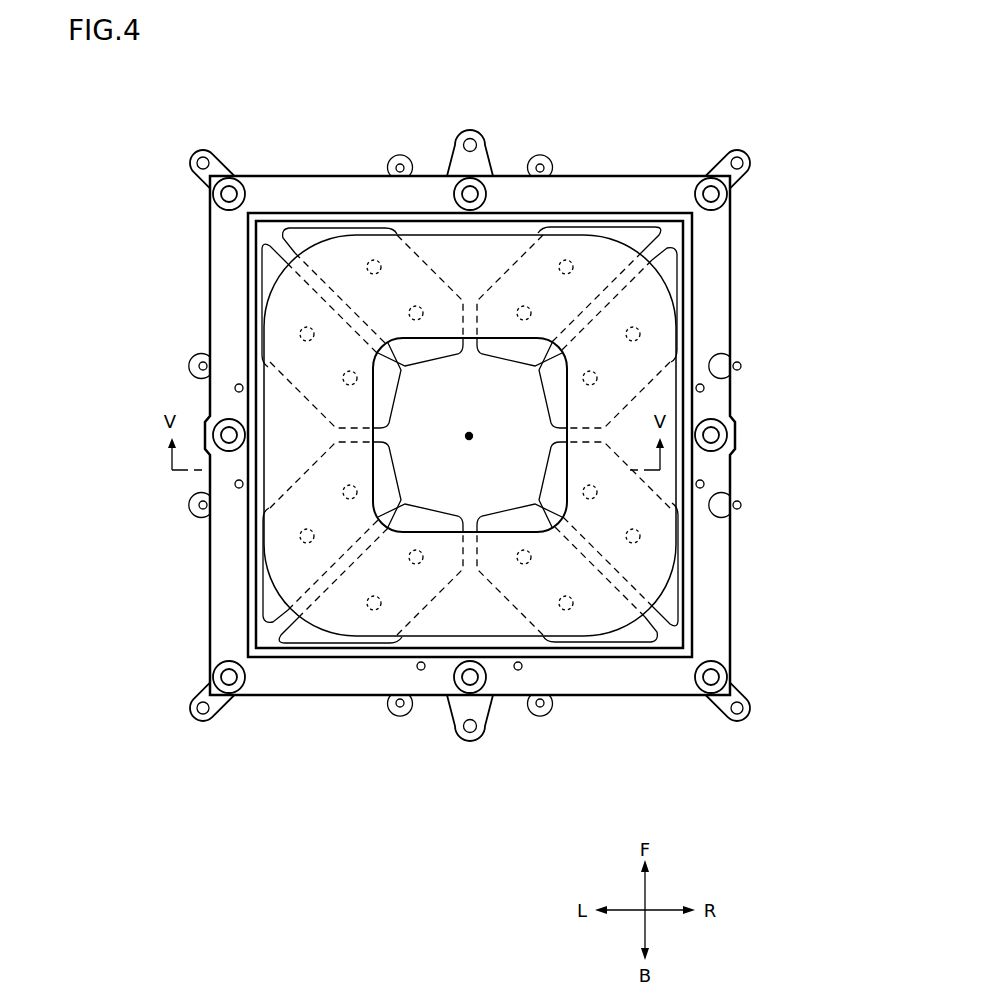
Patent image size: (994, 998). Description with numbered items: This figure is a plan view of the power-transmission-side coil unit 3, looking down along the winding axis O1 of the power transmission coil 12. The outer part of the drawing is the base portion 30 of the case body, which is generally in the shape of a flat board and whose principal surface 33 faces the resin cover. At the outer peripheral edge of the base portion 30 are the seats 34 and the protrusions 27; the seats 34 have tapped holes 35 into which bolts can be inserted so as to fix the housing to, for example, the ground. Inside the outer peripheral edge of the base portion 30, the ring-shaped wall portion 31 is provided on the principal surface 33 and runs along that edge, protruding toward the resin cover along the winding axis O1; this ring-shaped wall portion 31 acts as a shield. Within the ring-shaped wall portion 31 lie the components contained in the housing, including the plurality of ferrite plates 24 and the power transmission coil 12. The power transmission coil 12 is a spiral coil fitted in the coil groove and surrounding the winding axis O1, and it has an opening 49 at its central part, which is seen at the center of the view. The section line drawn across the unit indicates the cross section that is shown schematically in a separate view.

The power-transmission-side coil unit 3 is at (760, 82).
The power transmission coil 12 is at (455, 233).
The ferrite plates 24 is at (643, 237).
The protrusions 27 is at (539, 158).
The base portion 30 is at (732, 322).
The ring-shaped wall portion 31 is at (693, 276).
The principal surface 33 is at (720, 302).
The seats 34 is at (495, 440).
The tapped holes 35 is at (745, 152).
The opening 49 is at (557, 385).
The winding axis O1 is at (472, 433).